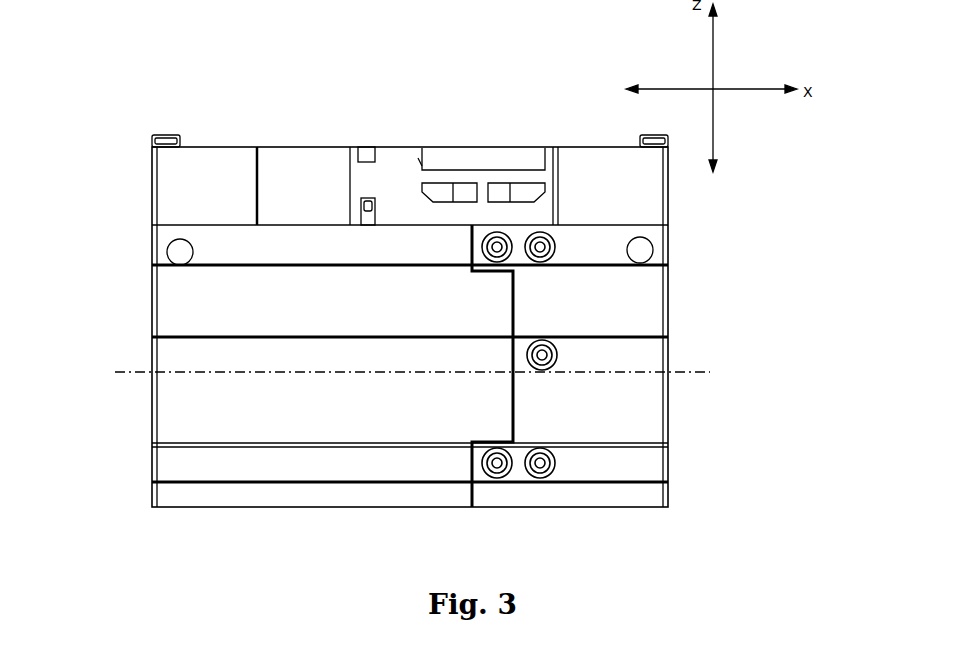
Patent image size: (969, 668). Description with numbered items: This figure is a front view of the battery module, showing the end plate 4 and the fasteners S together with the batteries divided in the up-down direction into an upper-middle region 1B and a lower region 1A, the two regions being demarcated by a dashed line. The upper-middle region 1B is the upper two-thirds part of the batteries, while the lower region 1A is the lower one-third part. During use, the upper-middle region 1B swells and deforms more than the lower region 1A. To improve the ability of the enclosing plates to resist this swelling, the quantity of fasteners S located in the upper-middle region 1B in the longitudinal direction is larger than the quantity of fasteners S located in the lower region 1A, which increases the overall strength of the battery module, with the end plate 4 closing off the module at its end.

The end plate 4 is at (303, 163).
The fastener S is at (492, 233).
The upper-middle region 1B is at (141, 147).
The lower region 1A is at (677, 377).